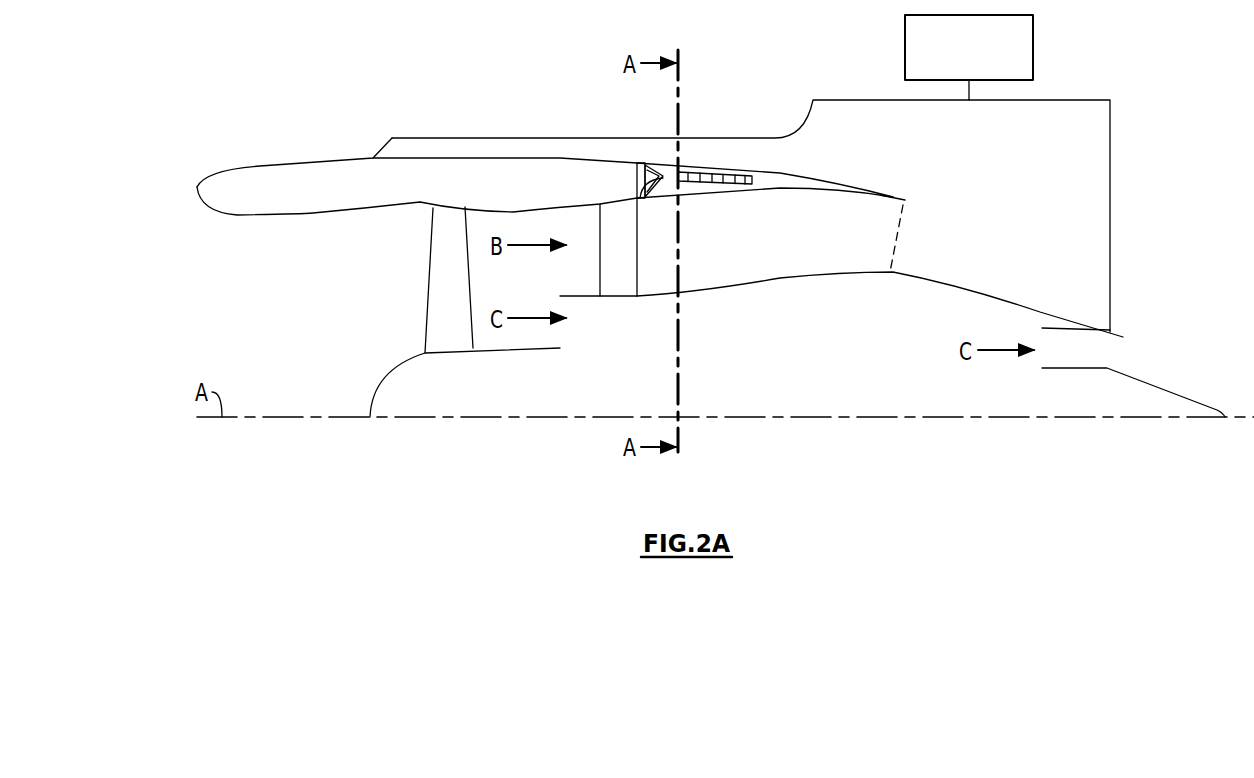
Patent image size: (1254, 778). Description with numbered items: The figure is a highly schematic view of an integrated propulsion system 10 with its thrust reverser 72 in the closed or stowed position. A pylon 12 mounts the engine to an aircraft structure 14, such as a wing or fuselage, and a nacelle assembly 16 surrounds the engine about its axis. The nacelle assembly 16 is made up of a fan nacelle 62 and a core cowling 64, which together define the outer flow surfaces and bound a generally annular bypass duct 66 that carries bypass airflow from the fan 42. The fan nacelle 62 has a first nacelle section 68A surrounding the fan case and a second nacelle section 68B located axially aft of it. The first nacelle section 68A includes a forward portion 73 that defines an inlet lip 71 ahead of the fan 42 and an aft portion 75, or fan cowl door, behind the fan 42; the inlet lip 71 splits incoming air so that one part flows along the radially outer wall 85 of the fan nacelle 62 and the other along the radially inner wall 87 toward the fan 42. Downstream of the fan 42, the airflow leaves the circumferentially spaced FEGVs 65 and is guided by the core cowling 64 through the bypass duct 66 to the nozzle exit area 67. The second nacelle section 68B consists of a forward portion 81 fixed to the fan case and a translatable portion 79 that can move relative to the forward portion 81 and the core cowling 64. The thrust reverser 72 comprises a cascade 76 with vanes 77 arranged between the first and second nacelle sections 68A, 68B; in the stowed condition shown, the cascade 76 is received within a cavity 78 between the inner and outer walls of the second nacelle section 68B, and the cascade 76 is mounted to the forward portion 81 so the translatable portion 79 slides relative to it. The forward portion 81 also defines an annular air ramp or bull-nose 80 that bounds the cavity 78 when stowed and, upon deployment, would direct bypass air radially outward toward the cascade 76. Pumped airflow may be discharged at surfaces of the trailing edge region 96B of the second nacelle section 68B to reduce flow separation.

The integrated propulsion system 10 is at (150, 105).
The pylon 12 is at (1062, 100).
The aircraft structure 14 is at (1035, 45).
The nacelle assembly 16 is at (253, 130).
The fan 42 is at (462, 300).
The fan nacelle 62 is at (450, 112).
The core cowling 64 is at (696, 288).
The FEGVs 65 is at (632, 266).
The bypass duct 66 is at (773, 268).
The nozzle exit area 67 is at (898, 245).
The first nacelle section 68A is at (515, 152).
The second nacelle section 68B is at (700, 160).
The inlet lip 71 is at (222, 175).
The thrust reverser 72 is at (665, 152).
The forward portion 73 is at (235, 220).
The aft portion 75 is at (593, 157).
The cascade 76 is at (708, 173).
The vanes 77 is at (722, 183).
The cavity 78 is at (757, 188).
The translatable portion 79 is at (777, 172).
The bull-nose 80 is at (660, 193).
The forward portion 81 is at (638, 162).
The radially outer wall 85 is at (295, 158).
The radially inner wall 87 is at (313, 213).
The trailing edge region 96B is at (884, 198).